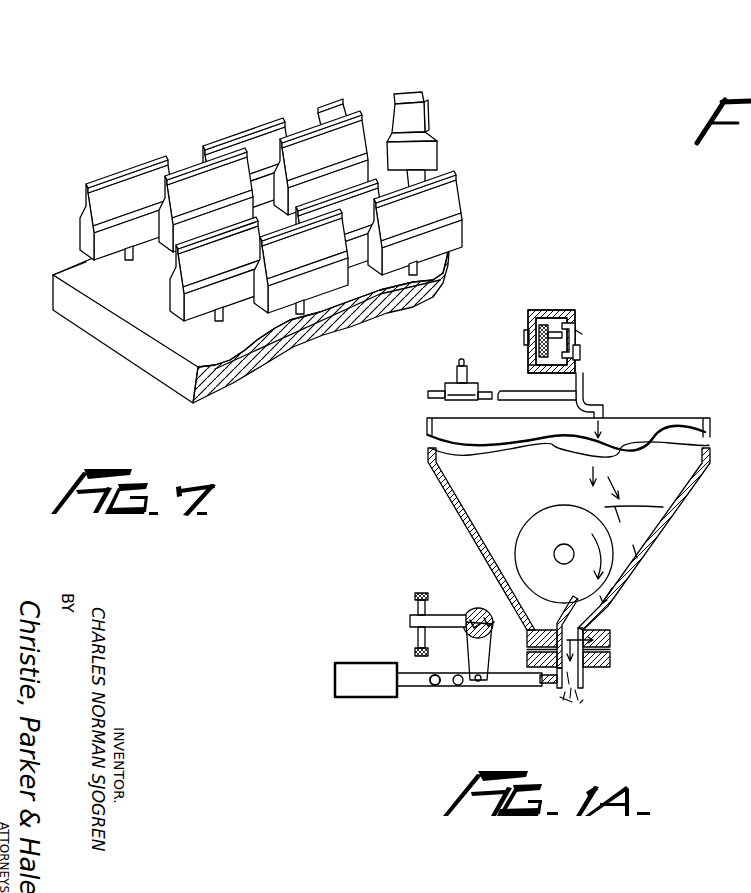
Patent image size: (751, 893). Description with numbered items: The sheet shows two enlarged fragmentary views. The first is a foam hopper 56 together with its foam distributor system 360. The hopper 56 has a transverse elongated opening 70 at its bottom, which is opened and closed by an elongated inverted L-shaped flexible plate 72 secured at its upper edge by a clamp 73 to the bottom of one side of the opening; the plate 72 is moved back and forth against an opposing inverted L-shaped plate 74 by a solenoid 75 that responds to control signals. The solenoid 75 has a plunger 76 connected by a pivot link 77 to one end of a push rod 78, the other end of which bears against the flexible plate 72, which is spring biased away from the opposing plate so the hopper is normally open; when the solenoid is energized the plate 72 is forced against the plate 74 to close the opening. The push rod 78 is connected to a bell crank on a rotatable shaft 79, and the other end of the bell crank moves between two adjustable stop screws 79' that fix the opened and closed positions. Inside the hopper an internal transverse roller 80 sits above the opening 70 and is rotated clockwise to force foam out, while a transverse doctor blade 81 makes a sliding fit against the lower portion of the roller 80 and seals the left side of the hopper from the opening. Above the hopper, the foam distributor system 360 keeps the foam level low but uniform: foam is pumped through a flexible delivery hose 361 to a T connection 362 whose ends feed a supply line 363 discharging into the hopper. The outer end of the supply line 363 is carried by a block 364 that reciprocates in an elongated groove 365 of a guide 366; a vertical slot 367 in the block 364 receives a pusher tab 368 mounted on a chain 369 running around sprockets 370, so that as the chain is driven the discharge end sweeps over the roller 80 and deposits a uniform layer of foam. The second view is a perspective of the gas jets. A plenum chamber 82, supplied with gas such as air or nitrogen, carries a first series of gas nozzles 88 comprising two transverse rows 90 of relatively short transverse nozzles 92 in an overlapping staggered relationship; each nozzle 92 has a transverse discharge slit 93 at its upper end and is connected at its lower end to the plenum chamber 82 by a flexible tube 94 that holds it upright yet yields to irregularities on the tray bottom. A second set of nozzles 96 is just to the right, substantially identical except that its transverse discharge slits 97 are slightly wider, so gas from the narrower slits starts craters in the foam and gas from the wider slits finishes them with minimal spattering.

In FIG. 7, the plenum chamber 82 is at (108, 335).
In FIG. 7, the first series of gas nozzles 88 is at (106, 120).
In FIG. 7, the transverse rows of nozzles 90 is at (368, 95).
In FIG. 7, the short transverse nozzle 92 is at (80, 238).
In FIG. 7, the transverse discharge slit 93 is at (236, 140).
In FIG. 7, the flexible tube 94 is at (131, 262).
In FIG. 7, the second set of nozzles 96 is at (474, 159).
In FIG. 7, the transverse discharge slits of second set 97 is at (458, 172).
In FIG. 1A, the foam hopper 56 is at (445, 478).
In FIG. 1A, the transverse elongated opening 70 is at (612, 638).
In FIG. 1A, the inverted L-shaped flexible plate 72 is at (558, 690).
In FIG. 1A, the clamp 73 is at (540, 678).
In FIG. 1A, the opposing inverted L-shaped plate 74 is at (583, 688).
In FIG. 1A, the solenoid 75 is at (357, 633).
In FIG. 1A, the plunger 76 is at (417, 687).
In FIG. 1A, the pivot link 77 is at (440, 687).
In FIG. 1A, the push rod 78 is at (465, 687).
In FIG. 1A, the rotatable shaft 79 is at (468, 620).
In FIG. 1A, the adjustable stop screws 79' is at (417, 621).
In FIG. 1A, the internal transverse roller 80 is at (577, 539).
In FIG. 1A, the transverse doctor blade 81 is at (600, 611).
In FIG. 1A, the foam distributor system 360 is at (647, 376).
In FIG. 1A, the flexible delivery hose 361 is at (462, 360).
In FIG. 1A, the T connection 362 is at (447, 390).
In FIG. 1A, the supply line 363 is at (436, 402).
In FIG. 1A, the block 364 is at (580, 326).
In FIG. 1A, the elongated groove 365 is at (578, 352).
In FIG. 1A, the guide 366 is at (555, 323).
In FIG. 1A, the vertical slot 367 is at (582, 333).
In FIG. 1A, the pusher tab 368 is at (554, 319).
In FIG. 1A, the chain 369 is at (541, 327).
In FIG. 1A, the sprockets 370 is at (530, 333).